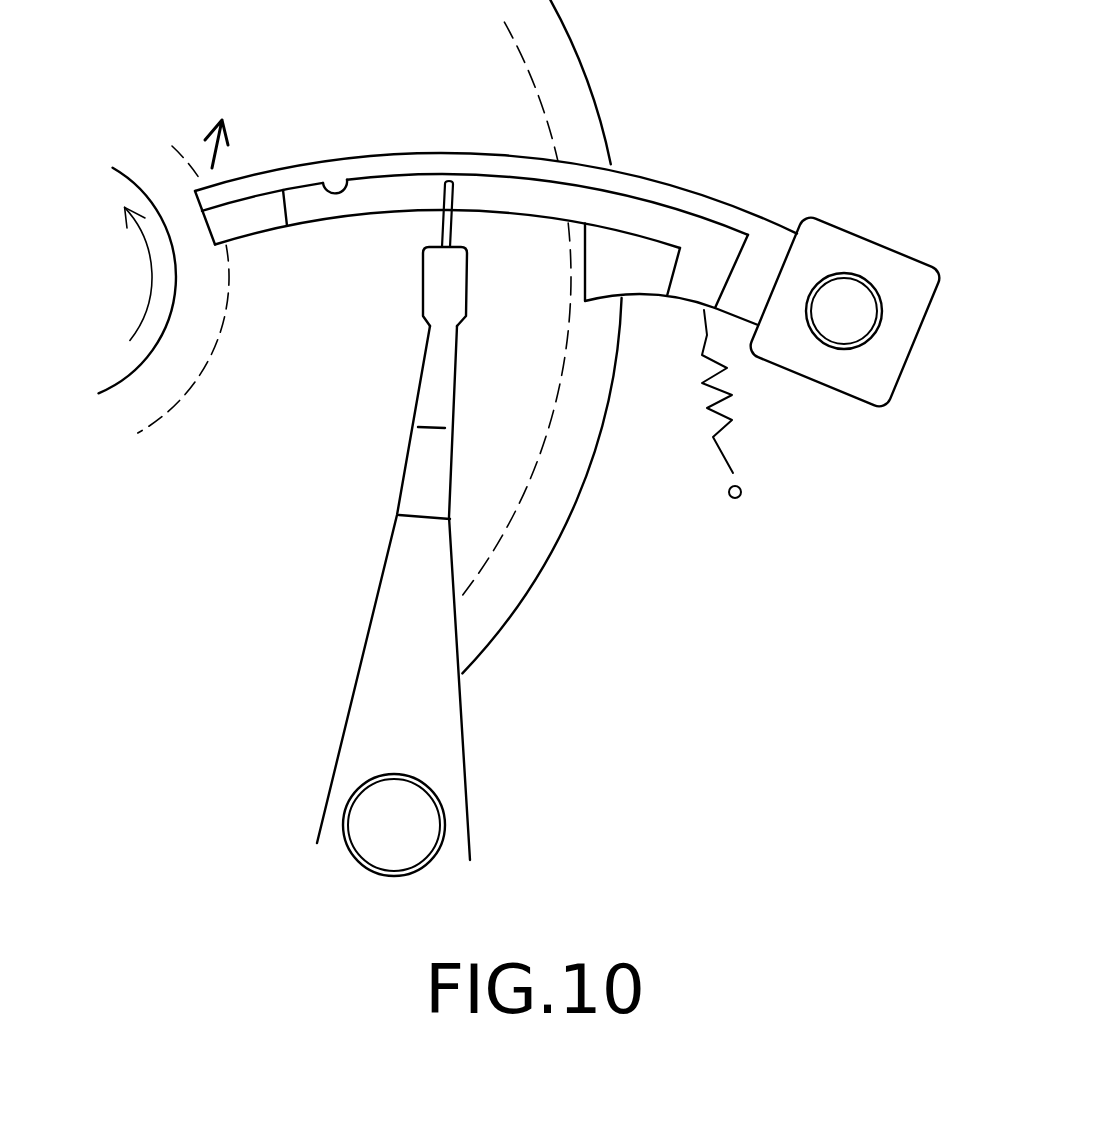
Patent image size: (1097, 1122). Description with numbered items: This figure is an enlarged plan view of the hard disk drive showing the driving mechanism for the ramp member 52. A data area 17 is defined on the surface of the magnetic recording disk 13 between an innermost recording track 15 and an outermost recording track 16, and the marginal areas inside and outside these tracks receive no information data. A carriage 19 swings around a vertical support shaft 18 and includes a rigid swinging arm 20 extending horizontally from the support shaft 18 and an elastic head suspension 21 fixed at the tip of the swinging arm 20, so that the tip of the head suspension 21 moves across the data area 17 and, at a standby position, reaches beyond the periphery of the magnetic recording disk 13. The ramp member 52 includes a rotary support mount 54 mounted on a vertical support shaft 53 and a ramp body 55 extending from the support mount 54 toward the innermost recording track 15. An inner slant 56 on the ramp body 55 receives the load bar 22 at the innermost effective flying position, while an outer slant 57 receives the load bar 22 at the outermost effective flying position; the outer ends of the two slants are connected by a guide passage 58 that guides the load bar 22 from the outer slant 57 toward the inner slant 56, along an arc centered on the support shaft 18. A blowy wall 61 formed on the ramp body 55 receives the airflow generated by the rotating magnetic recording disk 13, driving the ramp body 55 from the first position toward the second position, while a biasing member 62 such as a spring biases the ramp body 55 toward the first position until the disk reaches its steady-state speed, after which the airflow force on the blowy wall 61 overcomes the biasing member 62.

The magnetic recording disk 13 is at (593, 88).
The innermost recording track 15 is at (197, 388).
The outermost recording track 16 is at (527, 493).
The data area 17 is at (527, 400).
The support shaft 18 is at (352, 800).
The carriage 19 is at (547, 830).
The swinging arm 20 is at (462, 730).
The head suspension 21 is at (418, 374).
The load bar 22 is at (440, 232).
The ramp member 52 is at (780, 127).
The vertical support shaft 53 is at (845, 352).
The rotary support mount 54 is at (873, 238).
The ramp body 55 is at (496, 238).
The inner slant 56 is at (258, 217).
The outer slant 57 is at (638, 263).
The guide passage 58 is at (493, 197).
The blowy wall 61 is at (322, 188).
The biasing member 62 is at (740, 472).